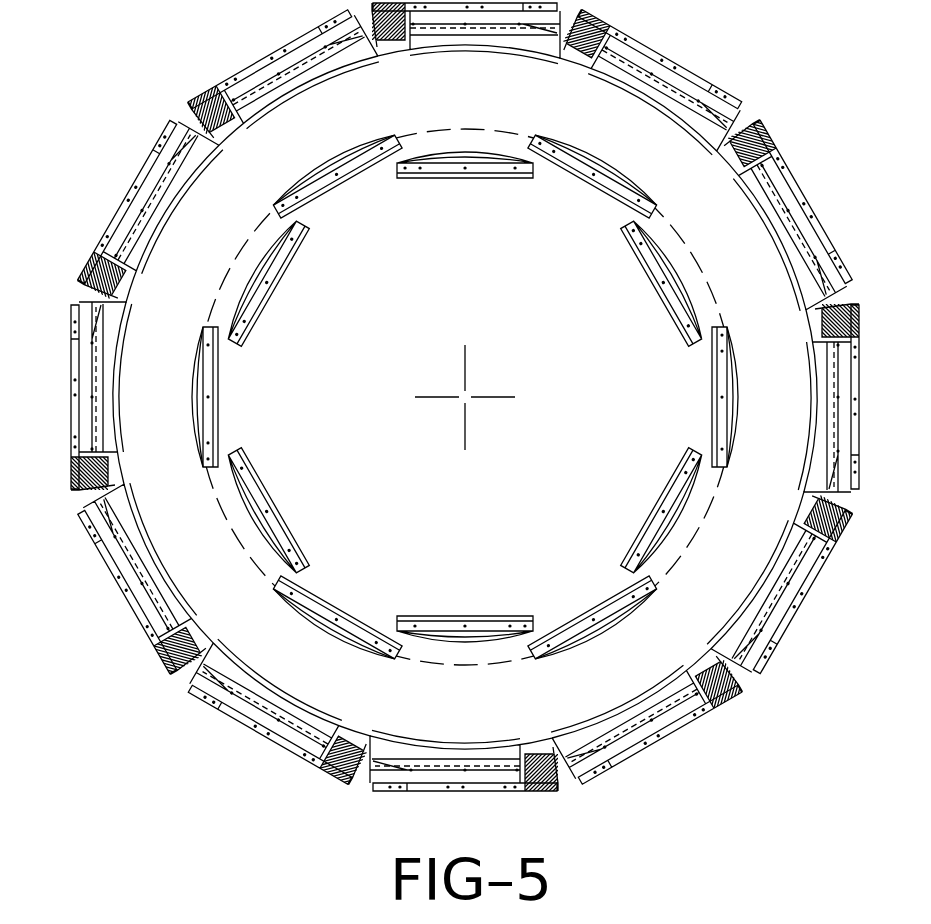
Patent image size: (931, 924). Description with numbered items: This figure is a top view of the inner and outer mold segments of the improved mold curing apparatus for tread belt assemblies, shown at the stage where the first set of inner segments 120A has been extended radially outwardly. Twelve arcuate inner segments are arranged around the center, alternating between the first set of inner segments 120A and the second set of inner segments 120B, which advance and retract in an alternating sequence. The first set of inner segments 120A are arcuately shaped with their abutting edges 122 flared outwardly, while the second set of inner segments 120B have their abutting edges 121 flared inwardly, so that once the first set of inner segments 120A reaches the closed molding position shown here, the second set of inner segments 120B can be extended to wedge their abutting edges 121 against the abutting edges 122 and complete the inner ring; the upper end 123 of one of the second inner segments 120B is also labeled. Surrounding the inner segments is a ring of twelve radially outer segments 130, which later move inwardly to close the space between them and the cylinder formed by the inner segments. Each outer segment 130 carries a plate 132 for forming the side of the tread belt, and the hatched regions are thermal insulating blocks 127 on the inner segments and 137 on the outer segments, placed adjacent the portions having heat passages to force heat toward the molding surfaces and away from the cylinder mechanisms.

The first set of inner segments 120A is at (342, 183).
The second set of inner segments 120B is at (265, 482).
The abutting edges 121 is at (303, 565).
The abutting edges 122 is at (398, 140).
The plate upper end 123 is at (237, 443).
The thermal insulating block 127 is at (268, 308).
The outer segments 130 is at (117, 573).
The bottom plate 132 is at (157, 610).
The thermal insulating block 137 is at (128, 190).